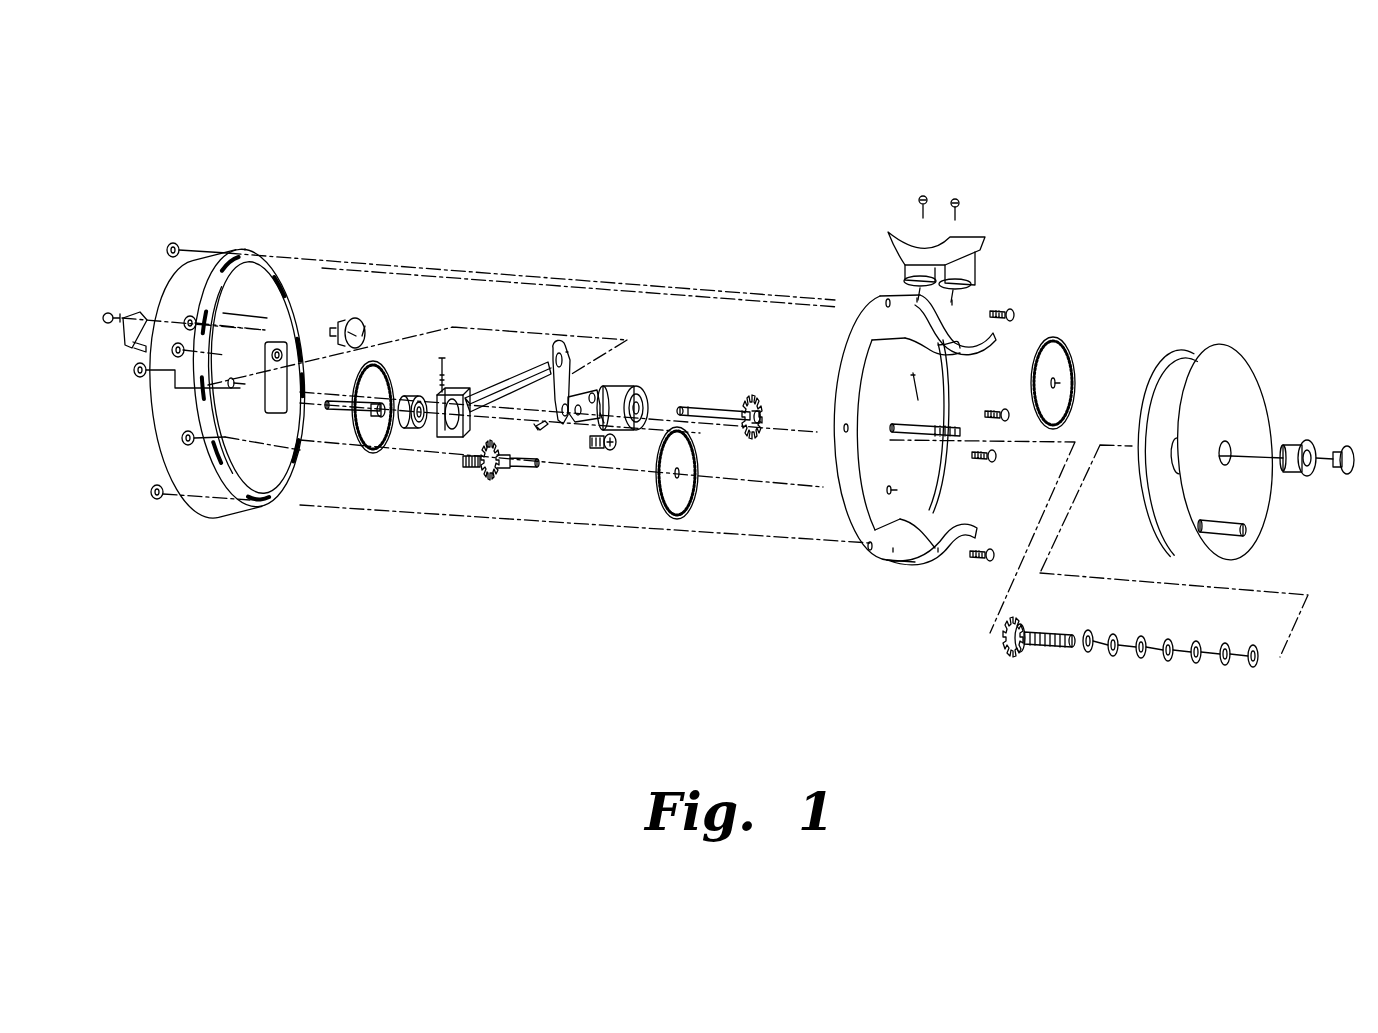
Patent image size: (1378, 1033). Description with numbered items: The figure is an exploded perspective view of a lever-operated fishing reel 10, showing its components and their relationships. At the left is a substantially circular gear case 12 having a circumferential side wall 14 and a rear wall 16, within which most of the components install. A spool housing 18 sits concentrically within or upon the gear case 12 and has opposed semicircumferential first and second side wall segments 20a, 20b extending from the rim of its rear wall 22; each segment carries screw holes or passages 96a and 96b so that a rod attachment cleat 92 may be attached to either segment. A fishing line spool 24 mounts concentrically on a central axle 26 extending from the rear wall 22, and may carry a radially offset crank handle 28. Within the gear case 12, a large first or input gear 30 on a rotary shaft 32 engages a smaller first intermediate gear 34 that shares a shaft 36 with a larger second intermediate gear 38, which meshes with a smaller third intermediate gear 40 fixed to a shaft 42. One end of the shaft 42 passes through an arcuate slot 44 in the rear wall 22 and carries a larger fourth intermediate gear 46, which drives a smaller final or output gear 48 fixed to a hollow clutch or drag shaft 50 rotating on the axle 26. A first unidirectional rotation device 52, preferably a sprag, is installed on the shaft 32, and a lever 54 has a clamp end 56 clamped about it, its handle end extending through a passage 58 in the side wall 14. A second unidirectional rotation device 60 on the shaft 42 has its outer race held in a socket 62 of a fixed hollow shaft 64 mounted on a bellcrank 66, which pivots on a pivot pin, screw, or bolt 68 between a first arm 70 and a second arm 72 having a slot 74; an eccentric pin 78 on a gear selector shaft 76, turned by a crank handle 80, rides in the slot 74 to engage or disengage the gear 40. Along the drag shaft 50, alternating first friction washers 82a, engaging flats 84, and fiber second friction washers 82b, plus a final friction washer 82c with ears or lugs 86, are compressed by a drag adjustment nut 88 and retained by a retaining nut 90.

The lever-operated fishing reel 10 is at (225, 100).
The gear case 12 is at (160, 448).
The circumferential side wall 14 is at (214, 294).
The rear wall 16 is at (267, 318).
The spool housing 18 is at (836, 355).
The first side wall segment 20a is at (975, 318).
The second side wall segment 20b is at (940, 560).
The rear wall 22 is at (935, 415).
The fishing line spool 24 is at (1183, 343).
The central axle 26 is at (912, 438).
The crank handle 28 is at (1226, 520).
The first or input gear 30 is at (365, 450).
The rotary shaft 32 is at (340, 418).
The first intermediate gear 34 is at (488, 480).
The shaft 36 is at (522, 468).
The second intermediate gear 38 is at (680, 488).
The third intermediate gear 40 is at (756, 398).
The shaft 42 is at (710, 408).
The arcuate slot 44 is at (927, 428).
The fourth intermediate gear 46 is at (1056, 340).
The final or output gear 48 is at (1010, 658).
The clutch or drag shaft 50 is at (1048, 650).
The first unidirectional rotation device 52 is at (420, 396).
The lever 54 is at (510, 376).
The clamp end 56 is at (445, 438).
The passage 58 is at (268, 425).
The second unidirectional rotation device 60 is at (647, 402).
The socket 62 is at (640, 392).
The hollow shaft 64 is at (620, 418).
The bellcrank 66 is at (592, 393).
The pivot pin, screw, or bolt 68 is at (606, 452).
The first arm 70 is at (566, 426).
The second arm 72 is at (553, 345).
The slot 74 is at (567, 349).
The gear selector shaft 76 is at (350, 318).
The eccentric pin 78 is at (365, 323).
The crank handle 80 is at (130, 348).
The first friction washers 82a is at (1143, 636).
The second friction washers 82b is at (1222, 665).
The final friction washer 82c is at (1250, 668).
The flats 84 is at (1086, 630).
The ears or lugs 86 is at (1258, 660).
The drag adjustment nut 88 is at (1304, 441).
The retaining nut 90 is at (1342, 449).
The rod attachment cleat 92 is at (892, 232).
The screw holes or passages 96a is at (915, 296).
The screw holes or passages 96b is at (940, 545).